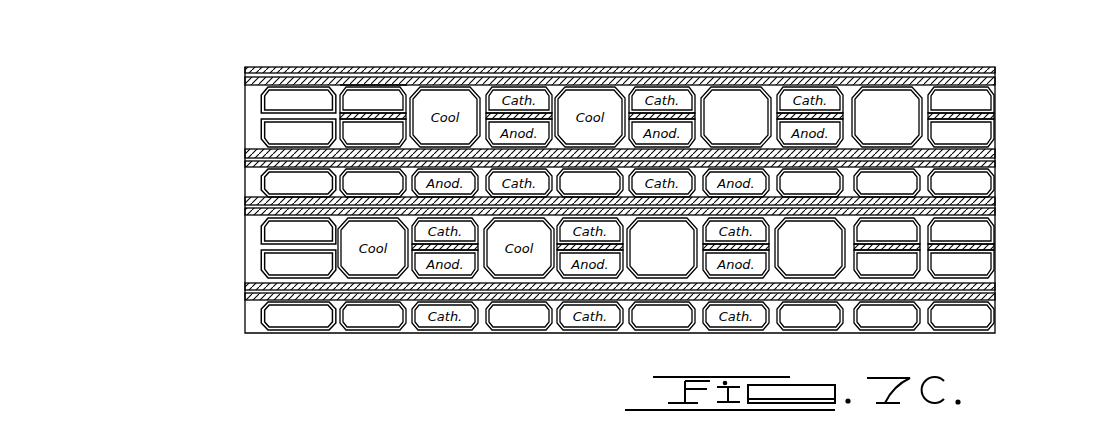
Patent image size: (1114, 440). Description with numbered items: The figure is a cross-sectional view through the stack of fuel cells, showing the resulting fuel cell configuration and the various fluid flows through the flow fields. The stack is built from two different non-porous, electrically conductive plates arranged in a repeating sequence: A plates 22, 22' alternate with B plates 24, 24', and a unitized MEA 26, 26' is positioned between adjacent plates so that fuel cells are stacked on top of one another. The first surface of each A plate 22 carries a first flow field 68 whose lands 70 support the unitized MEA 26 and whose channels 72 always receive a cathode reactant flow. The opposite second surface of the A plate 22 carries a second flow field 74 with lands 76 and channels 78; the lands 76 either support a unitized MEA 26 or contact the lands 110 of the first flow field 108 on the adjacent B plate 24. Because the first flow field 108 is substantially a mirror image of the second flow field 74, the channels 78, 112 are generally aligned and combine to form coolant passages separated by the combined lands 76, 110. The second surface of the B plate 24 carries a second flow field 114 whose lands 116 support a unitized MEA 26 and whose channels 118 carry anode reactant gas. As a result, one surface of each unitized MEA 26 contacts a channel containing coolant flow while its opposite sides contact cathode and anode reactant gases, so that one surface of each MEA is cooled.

The A plate 22 is at (987, 183).
The A plate 22' is at (987, 264).
The B plate 24 is at (987, 128).
The B plate 24' is at (989, 229).
The unitized MEA 26 is at (598, 169).
The unitized MEA 26' is at (591, 217).
The first flow field 68 is at (840, 84).
The lands 70 is at (287, 82).
The channels 72 is at (358, 85).
The second flow field 74 is at (740, 92).
The lands 76 is at (345, 120).
The channels 78 is at (303, 92).
The first flow field 108 is at (700, 100).
The lands 110 is at (276, 300).
The channels 112 is at (620, 332).
The second flow field 114 is at (885, 183).
The lands 116 is at (372, 290).
The channels 118 is at (307, 250).